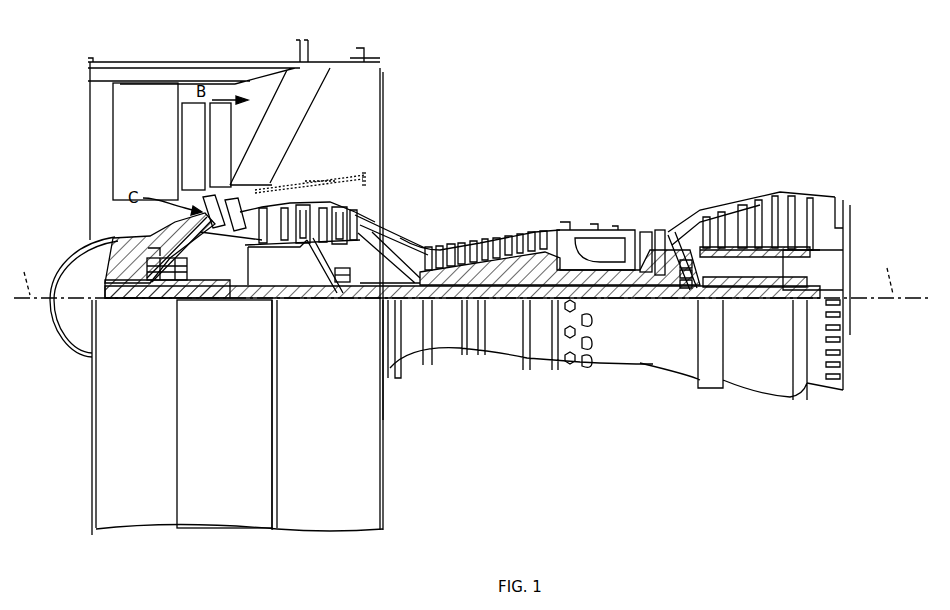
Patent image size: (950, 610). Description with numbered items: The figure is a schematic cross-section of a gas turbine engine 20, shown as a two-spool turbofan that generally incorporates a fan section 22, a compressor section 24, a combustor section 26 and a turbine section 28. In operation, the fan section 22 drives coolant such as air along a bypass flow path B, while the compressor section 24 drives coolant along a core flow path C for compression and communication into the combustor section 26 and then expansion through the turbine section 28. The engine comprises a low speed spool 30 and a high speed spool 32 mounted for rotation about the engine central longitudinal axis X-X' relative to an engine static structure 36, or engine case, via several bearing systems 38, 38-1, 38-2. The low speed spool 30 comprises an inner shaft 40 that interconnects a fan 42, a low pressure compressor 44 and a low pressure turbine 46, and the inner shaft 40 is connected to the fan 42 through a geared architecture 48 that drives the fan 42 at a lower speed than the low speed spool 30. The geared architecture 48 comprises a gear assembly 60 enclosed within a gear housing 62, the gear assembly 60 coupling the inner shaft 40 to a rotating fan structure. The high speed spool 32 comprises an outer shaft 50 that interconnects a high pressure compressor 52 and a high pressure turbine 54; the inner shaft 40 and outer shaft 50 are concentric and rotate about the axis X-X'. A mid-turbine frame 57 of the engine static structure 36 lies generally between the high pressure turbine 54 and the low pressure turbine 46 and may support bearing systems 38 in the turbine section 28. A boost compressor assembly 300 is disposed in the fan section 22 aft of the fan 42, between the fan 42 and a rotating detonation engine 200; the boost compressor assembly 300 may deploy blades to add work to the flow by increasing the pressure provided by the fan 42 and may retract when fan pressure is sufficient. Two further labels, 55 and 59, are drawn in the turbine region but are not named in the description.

The gas turbine engine 20 is at (632, 88).
The fan section 22 is at (268, 47).
The compressor section 24 is at (273, 145).
The combustor section 26 is at (553, 145).
The turbine section 28 is at (797, 145).
The low speed spool 30 is at (509, 308).
The high speed spool 32 is at (538, 270).
The engine static structure 36 is at (223, 510).
The bearing system 38 is at (678, 294).
The bearing system 38-1 is at (157, 283).
The bearing system 38-2 is at (344, 298).
The inner shaft 40 is at (397, 305).
The fan 42 is at (151, 160).
The low pressure compressor 44 is at (334, 218).
The low pressure turbine 46 is at (747, 217).
The geared architecture 48 is at (242, 308).
The outer shaft 50 is at (600, 292).
The high pressure compressor 52 is at (490, 267).
The high pressure turbine 54 is at (647, 224).
The mid-turbine frame 55 is at (667, 233).
The mid-turbine frame 57 is at (668, 230).
The airfoils / vanes 59 is at (693, 237).
The gear assembly 60 is at (273, 300).
The gear housing 62 is at (246, 253).
The rotating detonation engine 200 is at (225, 145).
The boost compressor assembly 300 is at (197, 146).